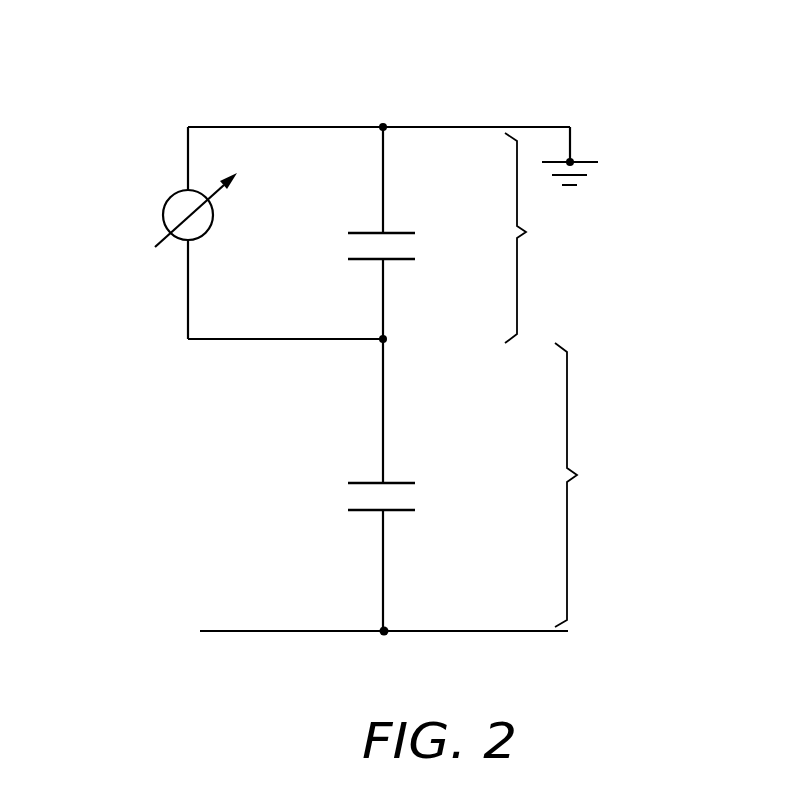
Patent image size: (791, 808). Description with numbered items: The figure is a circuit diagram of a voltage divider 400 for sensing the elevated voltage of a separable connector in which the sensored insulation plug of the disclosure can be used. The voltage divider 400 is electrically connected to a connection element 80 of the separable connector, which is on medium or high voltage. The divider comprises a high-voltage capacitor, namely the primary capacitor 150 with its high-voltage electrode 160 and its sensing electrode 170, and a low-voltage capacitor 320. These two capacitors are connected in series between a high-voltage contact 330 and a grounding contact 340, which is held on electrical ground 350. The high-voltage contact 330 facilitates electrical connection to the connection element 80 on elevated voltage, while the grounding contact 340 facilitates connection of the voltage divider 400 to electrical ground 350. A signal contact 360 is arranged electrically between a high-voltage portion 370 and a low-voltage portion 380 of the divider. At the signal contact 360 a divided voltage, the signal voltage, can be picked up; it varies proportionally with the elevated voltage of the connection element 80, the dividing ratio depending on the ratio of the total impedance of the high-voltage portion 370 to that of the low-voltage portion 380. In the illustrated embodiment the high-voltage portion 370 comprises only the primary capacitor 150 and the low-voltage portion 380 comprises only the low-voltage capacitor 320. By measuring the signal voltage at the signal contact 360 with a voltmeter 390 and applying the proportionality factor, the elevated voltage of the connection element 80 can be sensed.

The connection element 80 is at (427, 631).
The primary capacitor 150 is at (360, 485).
The high-voltage electrode 160 is at (400, 512).
The sensing electrode 170 is at (400, 482).
The low-voltage capacitor 320 is at (400, 232).
The high-voltage contact 330 is at (384, 631).
The grounding contact 340 is at (383, 127).
The electrical ground 350 is at (588, 160).
The signal contact 360 is at (397, 339).
The high-voltage portion 370 is at (589, 485).
The low-voltage portion 380 is at (539, 238).
The voltmeter 390 is at (168, 197).
The voltage divider 400 is at (681, 287).